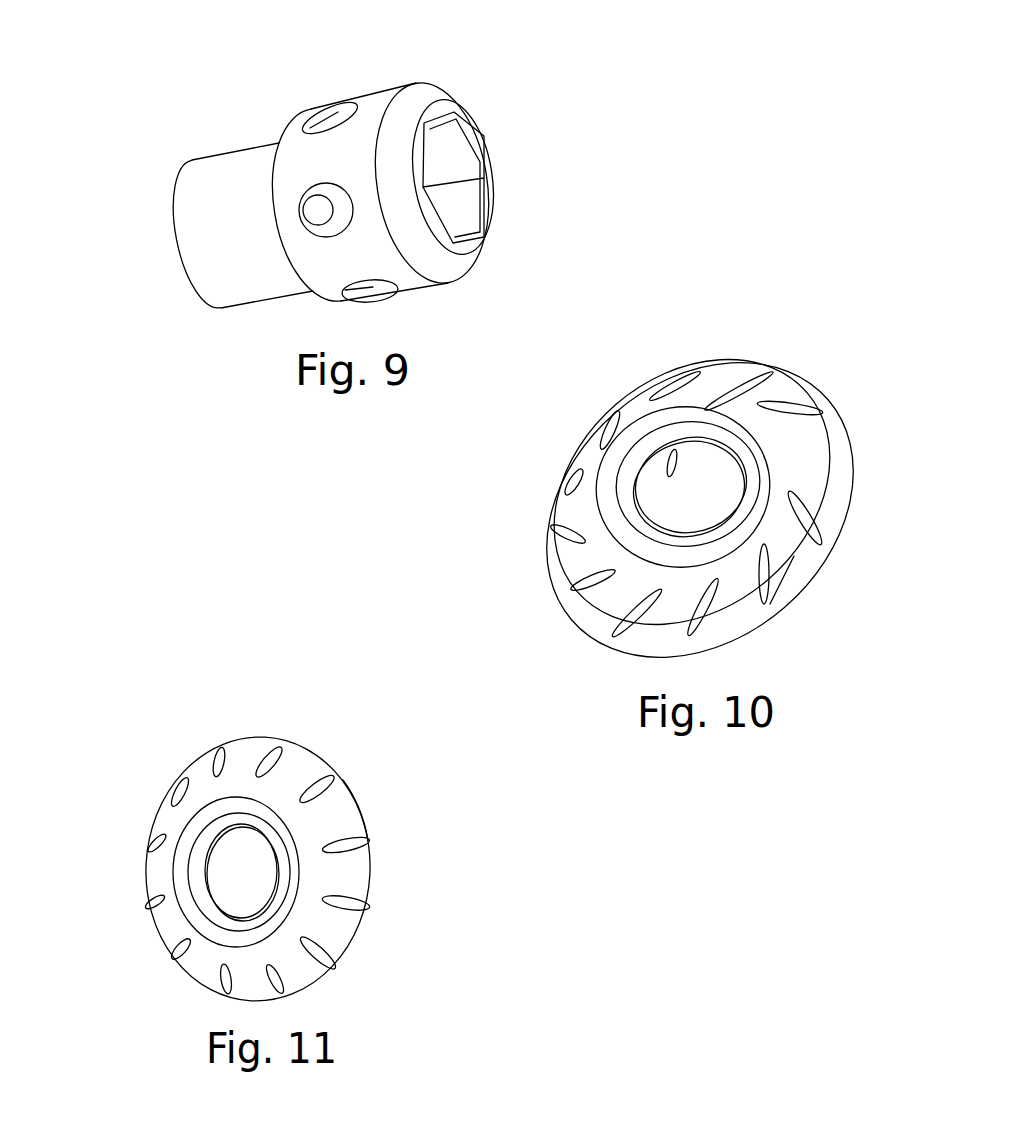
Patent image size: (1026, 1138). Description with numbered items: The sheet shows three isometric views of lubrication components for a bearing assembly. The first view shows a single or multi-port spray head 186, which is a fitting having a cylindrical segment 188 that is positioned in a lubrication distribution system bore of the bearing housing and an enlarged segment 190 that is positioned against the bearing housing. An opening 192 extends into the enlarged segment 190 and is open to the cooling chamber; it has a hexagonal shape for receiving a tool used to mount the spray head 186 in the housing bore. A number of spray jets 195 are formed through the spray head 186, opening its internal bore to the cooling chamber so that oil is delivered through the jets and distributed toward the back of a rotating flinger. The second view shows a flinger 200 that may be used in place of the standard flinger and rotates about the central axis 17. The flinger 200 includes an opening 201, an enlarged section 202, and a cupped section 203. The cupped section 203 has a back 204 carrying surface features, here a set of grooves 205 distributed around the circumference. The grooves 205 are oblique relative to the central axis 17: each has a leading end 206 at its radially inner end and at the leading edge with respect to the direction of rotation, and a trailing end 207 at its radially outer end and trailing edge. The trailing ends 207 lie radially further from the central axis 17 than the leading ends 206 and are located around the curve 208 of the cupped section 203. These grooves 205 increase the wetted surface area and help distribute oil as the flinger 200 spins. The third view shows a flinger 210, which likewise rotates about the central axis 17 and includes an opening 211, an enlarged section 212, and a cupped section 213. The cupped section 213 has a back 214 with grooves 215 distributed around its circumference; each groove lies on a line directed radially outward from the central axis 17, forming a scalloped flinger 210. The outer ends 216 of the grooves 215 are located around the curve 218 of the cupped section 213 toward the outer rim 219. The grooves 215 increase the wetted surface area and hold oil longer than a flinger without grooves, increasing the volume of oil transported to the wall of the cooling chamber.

In FIG. 9, the spray head 186 is at (327, 86).
In FIG. 9, the cylindrical segment 188 is at (227, 184).
In FIG. 9, the enlarged segment 190 is at (388, 95).
In FIG. 9, the opening 192 is at (463, 190).
In FIG. 9, the spray jets 195 is at (313, 126).
In FIG. 10, the flinger 200 is at (803, 370).
In FIG. 10, the opening 201 is at (675, 476).
In FIG. 10, the enlarged section 202 is at (705, 400).
In FIG. 10, the cupped section 203 is at (793, 447).
In FIG. 10, the back 204 is at (566, 492).
In FIG. 10, the grooves 205 is at (552, 528).
In FIG. 10, the leading end 206 is at (765, 542).
In FIG. 10, the trailing end 207 is at (768, 604).
In FIG. 10, the curve 208 is at (795, 557).
In FIG. 10, the central axis 17 is at (684, 490).
In FIG. 11, the central axis 17 is at (238, 873).
In FIG. 11, the flinger 210 is at (317, 750).
In FIG. 11, the opening 211 is at (240, 828).
In FIG. 11, the enlarged section 212 is at (287, 853).
In FIG. 11, the cupped section 213 is at (170, 922).
In FIG. 11, the back 214 is at (250, 752).
In FIG. 11, the grooves 215 is at (290, 994).
In FIG. 11, the outer ends 216 is at (352, 841).
In FIG. 11, the curve 218 is at (332, 798).
In FIG. 11, the outer rim 219 is at (357, 803).